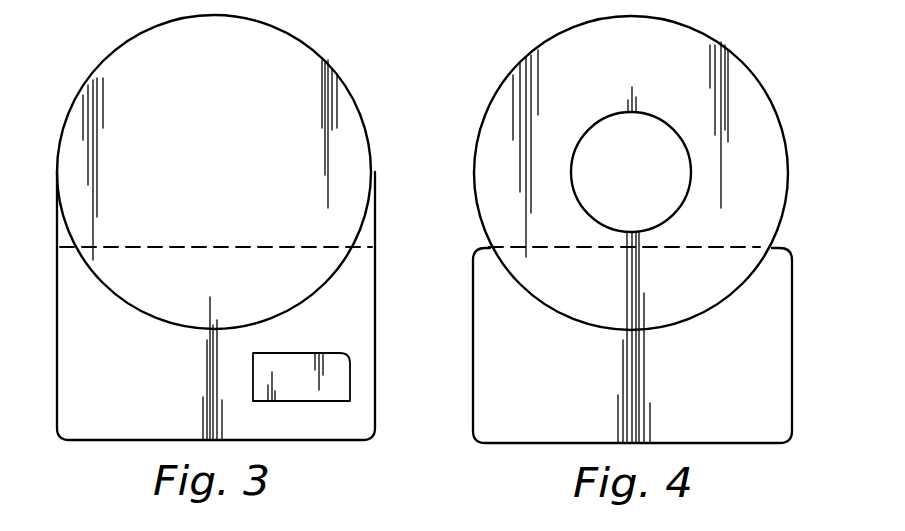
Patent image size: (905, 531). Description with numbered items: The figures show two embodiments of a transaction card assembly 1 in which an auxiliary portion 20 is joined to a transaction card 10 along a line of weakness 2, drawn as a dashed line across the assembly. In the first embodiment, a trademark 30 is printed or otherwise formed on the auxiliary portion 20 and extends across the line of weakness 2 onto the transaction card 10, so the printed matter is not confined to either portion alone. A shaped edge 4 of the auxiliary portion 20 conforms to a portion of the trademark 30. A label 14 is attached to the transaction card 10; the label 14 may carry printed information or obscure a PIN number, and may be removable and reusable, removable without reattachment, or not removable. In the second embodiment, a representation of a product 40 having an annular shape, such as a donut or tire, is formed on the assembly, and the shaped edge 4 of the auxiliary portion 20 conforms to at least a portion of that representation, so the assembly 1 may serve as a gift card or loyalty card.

In FIG. 3, the transaction card assembly 1 is at (76, 69).
In FIG. 4, the transaction card assembly 1 is at (538, 37).
In FIG. 3, the line of weakness 2 is at (338, 247).
In FIG. 4, the line of weakness 2 is at (752, 250).
In FIG. 3, the shaped edge 4 is at (136, 37).
In FIG. 4, the shaped edge 4 is at (722, 45).
In FIG. 3, the transaction card 10 is at (358, 300).
In FIG. 4, the transaction card 10 is at (778, 299).
In FIG. 3, the label 14 is at (343, 372).
In FIG. 3, the auxiliary portion 20 is at (340, 96).
In FIG. 4, the auxiliary portion 20 is at (758, 82).
In FIG. 3, the trademark 30 is at (290, 93).
In FIG. 4, the representation of a product 40 is at (493, 210).